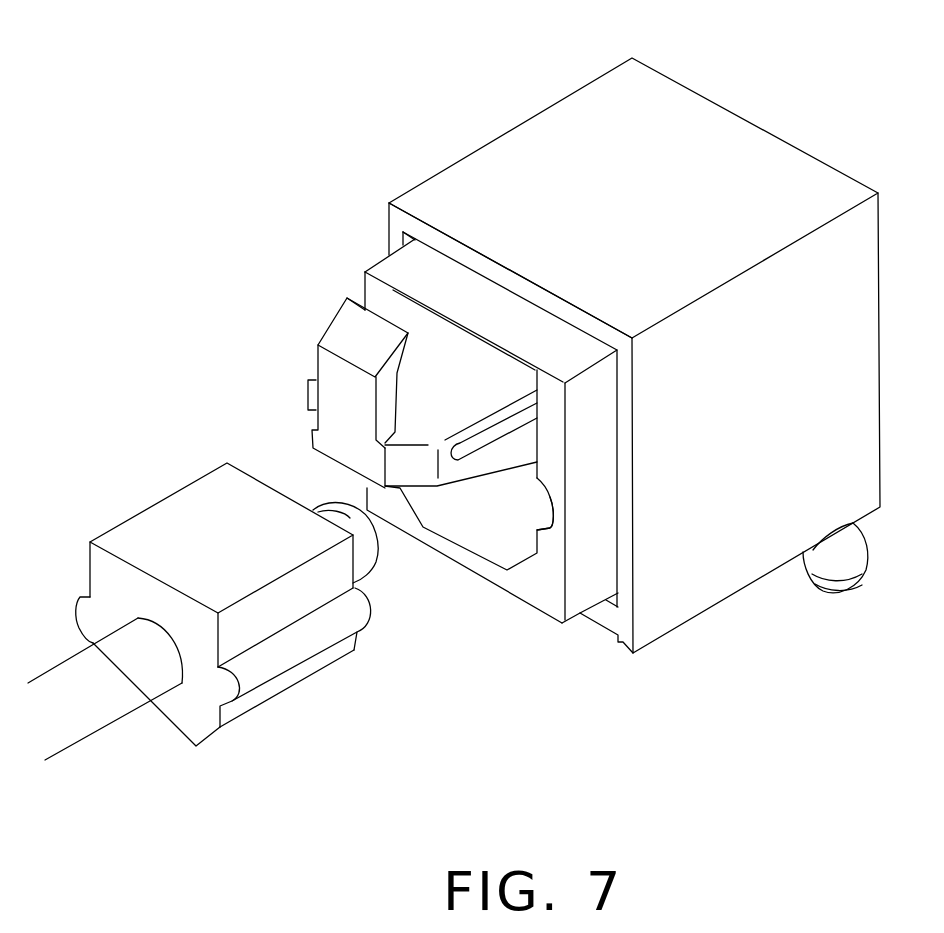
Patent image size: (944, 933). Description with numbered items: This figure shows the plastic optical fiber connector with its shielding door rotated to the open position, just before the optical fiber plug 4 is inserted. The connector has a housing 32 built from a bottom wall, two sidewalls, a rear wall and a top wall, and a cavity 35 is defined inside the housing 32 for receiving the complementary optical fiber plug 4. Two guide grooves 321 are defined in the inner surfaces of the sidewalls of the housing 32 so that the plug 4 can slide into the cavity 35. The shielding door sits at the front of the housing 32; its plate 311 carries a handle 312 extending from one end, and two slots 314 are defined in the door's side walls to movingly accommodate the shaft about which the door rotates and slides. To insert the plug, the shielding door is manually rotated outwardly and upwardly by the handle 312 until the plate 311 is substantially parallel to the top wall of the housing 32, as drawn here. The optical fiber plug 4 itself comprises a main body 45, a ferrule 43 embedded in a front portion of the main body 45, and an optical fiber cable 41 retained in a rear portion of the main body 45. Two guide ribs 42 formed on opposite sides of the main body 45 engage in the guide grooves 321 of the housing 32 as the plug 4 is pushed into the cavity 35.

The housing 32 is at (733, 92).
The plate 311 is at (423, 327).
The handle 312 is at (338, 336).
The slots 314 is at (497, 440).
The guide grooves 321 is at (547, 528).
The cavity 35 is at (461, 490).
The optical fiber plug 4 is at (227, 592).
The optical fiber cable 41 is at (87, 692).
The guide ribs 42 is at (315, 637).
The ferrule 43 is at (333, 512).
The main body 45 is at (188, 524).